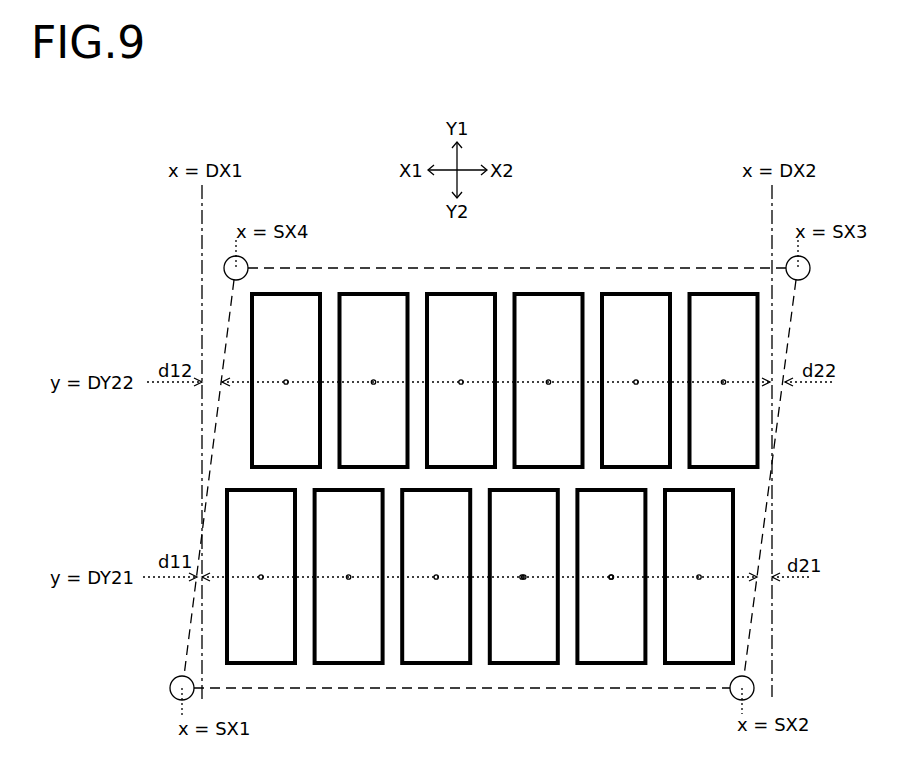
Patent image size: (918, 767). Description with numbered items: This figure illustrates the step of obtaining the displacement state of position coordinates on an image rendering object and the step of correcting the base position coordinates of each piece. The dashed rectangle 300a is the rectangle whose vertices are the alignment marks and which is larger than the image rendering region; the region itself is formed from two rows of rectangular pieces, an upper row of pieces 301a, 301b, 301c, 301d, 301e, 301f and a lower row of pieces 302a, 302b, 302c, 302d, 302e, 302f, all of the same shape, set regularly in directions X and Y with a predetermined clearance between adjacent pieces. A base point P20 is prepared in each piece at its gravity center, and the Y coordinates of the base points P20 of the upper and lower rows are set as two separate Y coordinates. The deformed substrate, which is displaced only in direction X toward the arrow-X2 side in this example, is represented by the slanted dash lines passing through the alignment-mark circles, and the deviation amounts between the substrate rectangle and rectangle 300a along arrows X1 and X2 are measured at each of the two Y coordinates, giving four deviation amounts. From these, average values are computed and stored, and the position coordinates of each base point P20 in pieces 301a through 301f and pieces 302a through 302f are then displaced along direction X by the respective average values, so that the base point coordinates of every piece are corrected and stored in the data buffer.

The rectangle 300a is at (540, 266).
The piece 301a is at (310, 323).
The piece 301b is at (397, 323).
The piece 301c is at (485, 323).
The piece 301d is at (572, 323).
The piece 301e is at (660, 323).
The piece 301f is at (745, 323).
The piece 302a is at (285, 521).
The piece 302b is at (372, 521).
The piece 302c is at (460, 521).
The piece 302d is at (547, 521).
The piece 302e is at (635, 521).
The piece 302f is at (719, 521).
The base point P20 is at (611, 579).